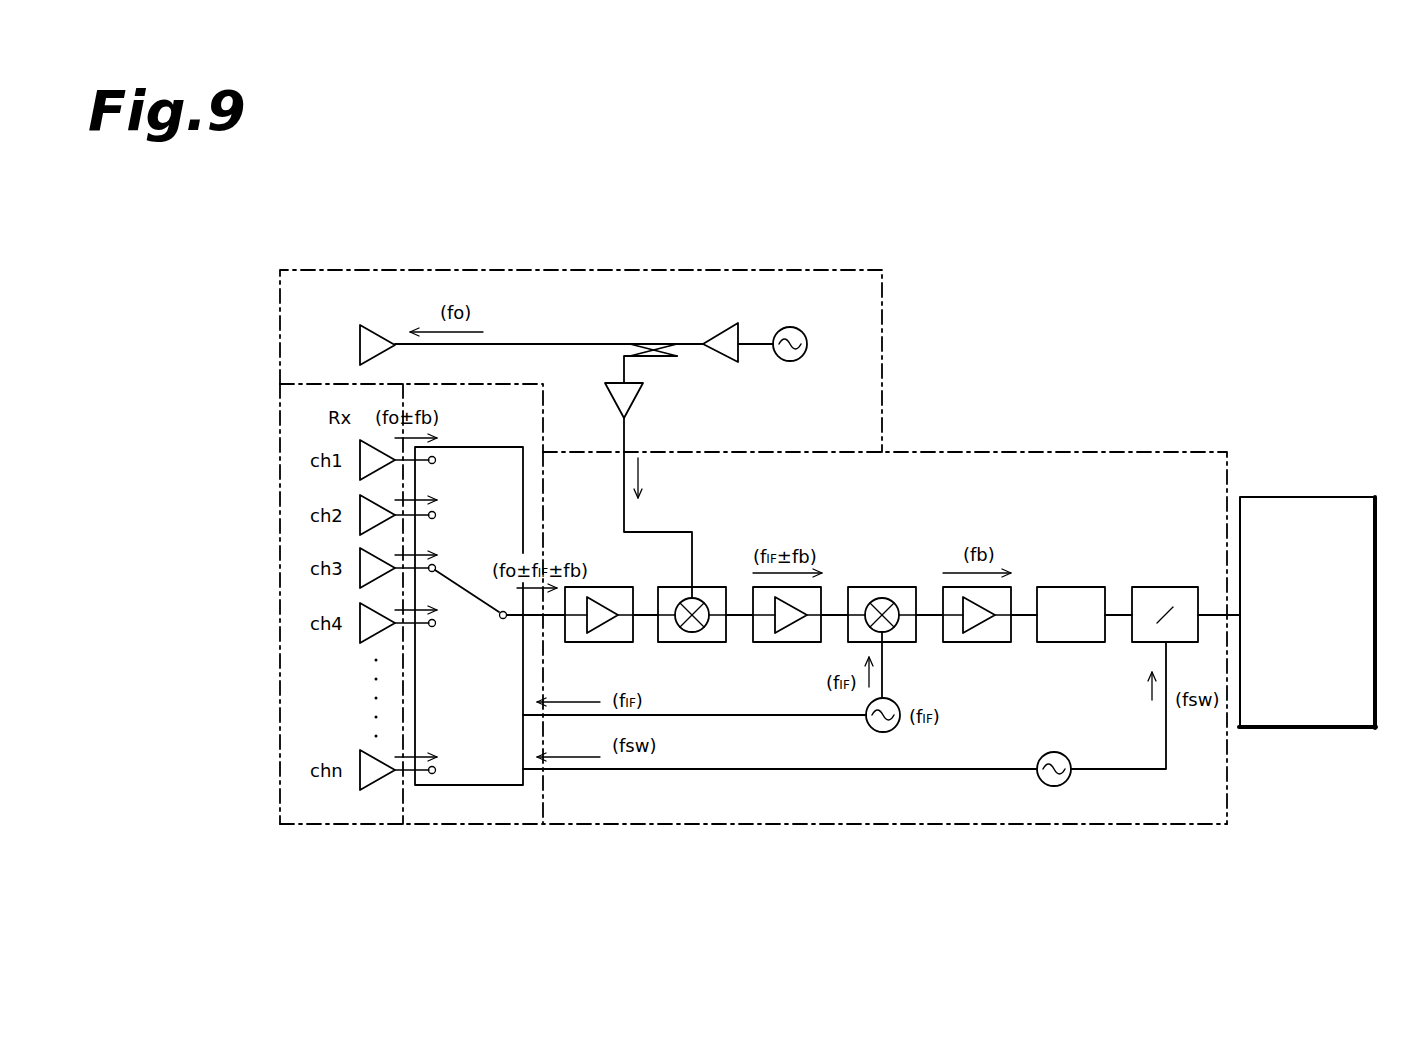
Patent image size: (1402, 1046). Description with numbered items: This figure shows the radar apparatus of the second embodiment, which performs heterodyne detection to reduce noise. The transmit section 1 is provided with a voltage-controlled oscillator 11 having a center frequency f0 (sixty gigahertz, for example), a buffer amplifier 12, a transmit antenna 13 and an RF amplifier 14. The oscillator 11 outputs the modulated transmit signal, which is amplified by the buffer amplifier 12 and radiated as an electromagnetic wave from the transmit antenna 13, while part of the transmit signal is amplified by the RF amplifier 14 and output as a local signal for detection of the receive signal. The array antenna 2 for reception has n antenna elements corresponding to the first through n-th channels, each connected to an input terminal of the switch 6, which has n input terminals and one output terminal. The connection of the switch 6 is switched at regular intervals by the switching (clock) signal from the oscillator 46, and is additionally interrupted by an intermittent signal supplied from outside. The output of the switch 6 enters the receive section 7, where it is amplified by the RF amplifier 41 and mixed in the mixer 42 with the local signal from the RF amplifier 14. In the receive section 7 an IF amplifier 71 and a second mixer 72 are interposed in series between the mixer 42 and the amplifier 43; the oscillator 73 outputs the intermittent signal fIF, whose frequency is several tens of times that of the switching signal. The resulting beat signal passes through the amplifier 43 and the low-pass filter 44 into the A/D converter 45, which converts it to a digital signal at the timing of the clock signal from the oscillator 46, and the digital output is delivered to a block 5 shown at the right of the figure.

The transmit section 1 is at (572, 268).
The array antenna 2 is at (345, 826).
The signal processing unit 5 is at (1312, 730).
The switch 6 is at (487, 826).
The receive section 7 is at (845, 826).
The voltage-controlled oscillator 11 is at (791, 362).
The buffer amplifier 12 is at (726, 324).
The transmit antenna 13 is at (368, 326).
The RF amplifier 14 is at (641, 400).
The RF amplifier 41 is at (617, 644).
The mixer 42 is at (700, 644).
The amplifier 43 is at (982, 644).
The filter 44 is at (1068, 644).
The A/D converter 45 is at (1140, 644).
The switching signal oscillator 46 is at (1072, 780).
The IF amplifier 71 is at (800, 644).
The second mixer 72 is at (893, 644).
The oscillator 73 is at (868, 728).